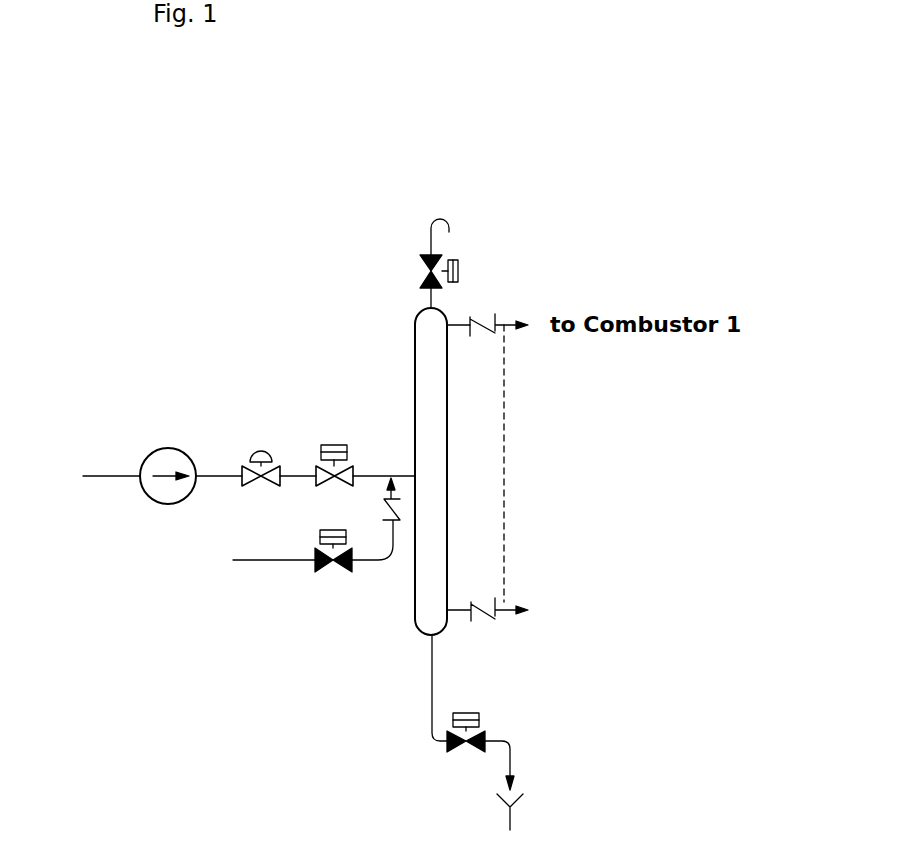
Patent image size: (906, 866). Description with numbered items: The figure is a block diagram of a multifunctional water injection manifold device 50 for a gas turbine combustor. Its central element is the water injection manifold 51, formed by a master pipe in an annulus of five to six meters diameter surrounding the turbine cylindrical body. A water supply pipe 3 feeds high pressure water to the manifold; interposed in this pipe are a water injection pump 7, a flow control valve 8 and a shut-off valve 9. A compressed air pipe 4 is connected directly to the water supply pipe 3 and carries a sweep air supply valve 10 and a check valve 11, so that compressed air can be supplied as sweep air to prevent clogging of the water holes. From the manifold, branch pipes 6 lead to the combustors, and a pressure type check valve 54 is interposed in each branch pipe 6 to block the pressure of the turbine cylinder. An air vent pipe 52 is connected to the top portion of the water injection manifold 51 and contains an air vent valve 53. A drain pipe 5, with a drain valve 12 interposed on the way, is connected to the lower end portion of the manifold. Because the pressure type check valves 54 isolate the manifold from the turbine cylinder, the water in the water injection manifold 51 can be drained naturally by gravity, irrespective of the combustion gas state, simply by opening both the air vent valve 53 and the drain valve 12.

The water supply pipe 3 is at (93, 478).
The compressed air pipe 4 is at (282, 560).
The drain pipe 5 is at (510, 775).
The branch pipes 6 is at (458, 322).
The water injection pump 7 is at (182, 450).
The flow control valve 8 is at (260, 447).
The shut-off valve 9 is at (328, 444).
The sweep air supply valve 10 is at (313, 567).
The check valve 11 is at (385, 513).
The drain valve 12 is at (483, 734).
The multifunctional water injection manifold device 50 is at (506, 505).
The water injection manifold 51 is at (447, 423).
The air vent pipe 52 is at (430, 241).
The air vent valve 53 is at (459, 268).
The pressure type check valves 54 is at (494, 324).